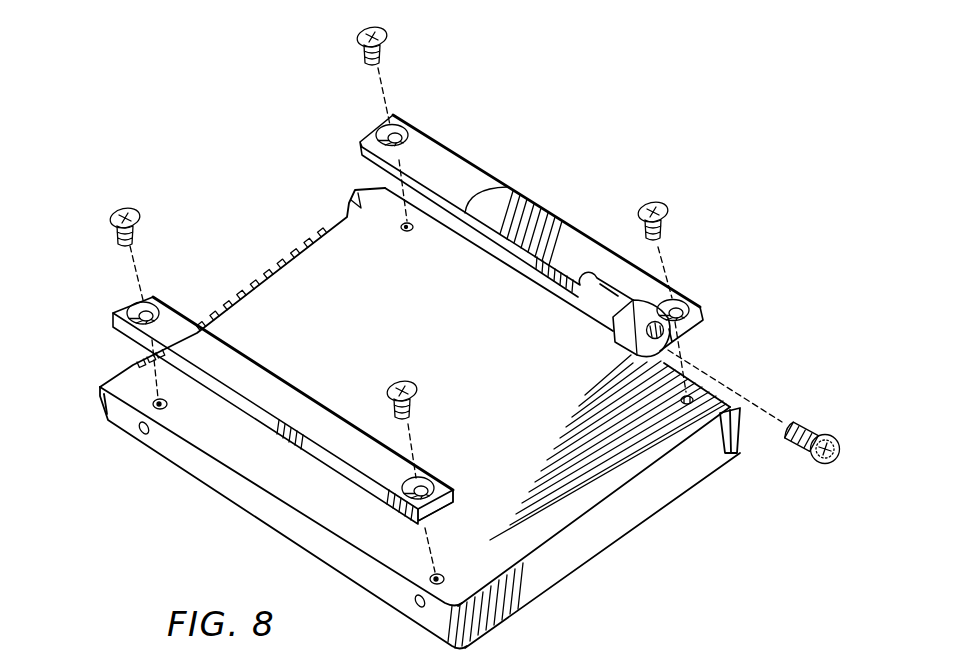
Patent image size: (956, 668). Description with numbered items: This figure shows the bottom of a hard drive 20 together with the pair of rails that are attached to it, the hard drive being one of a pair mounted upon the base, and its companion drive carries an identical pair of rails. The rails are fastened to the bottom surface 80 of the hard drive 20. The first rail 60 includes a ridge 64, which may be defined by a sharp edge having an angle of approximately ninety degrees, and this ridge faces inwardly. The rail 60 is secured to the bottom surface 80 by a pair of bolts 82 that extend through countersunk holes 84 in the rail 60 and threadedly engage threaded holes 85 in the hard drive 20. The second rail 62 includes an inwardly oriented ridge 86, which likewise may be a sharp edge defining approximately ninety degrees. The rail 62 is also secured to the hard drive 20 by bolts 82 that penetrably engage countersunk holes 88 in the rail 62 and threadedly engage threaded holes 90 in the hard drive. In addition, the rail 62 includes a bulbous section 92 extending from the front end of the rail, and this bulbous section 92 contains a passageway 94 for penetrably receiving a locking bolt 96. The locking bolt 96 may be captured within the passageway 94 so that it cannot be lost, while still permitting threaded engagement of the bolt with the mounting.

The hard drive 20 is at (171, 470).
The rail 60 is at (115, 318).
The rail 62 is at (493, 168).
The ridge 64 is at (445, 478).
The bottom surface 80 is at (574, 505).
The bolts 82 is at (386, 44).
The countersunk holes 84 is at (165, 300).
The threaded holes 85 is at (153, 410).
The ridge 86 is at (495, 207).
The countersunk holes 88 is at (405, 128).
The threaded holes 90 is at (415, 232).
The bulbous section 92 is at (622, 333).
The passageway 94 is at (648, 362).
The locking bolt 96 is at (810, 424).